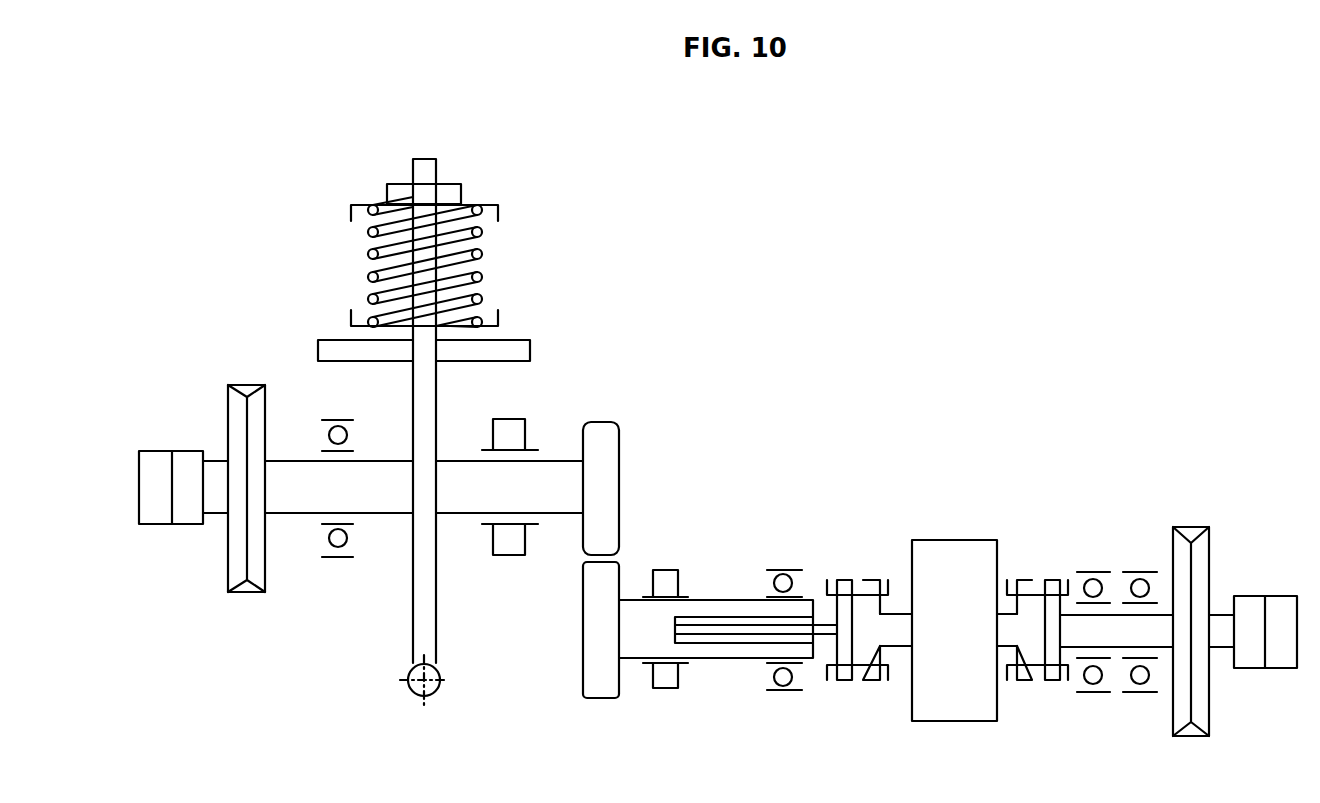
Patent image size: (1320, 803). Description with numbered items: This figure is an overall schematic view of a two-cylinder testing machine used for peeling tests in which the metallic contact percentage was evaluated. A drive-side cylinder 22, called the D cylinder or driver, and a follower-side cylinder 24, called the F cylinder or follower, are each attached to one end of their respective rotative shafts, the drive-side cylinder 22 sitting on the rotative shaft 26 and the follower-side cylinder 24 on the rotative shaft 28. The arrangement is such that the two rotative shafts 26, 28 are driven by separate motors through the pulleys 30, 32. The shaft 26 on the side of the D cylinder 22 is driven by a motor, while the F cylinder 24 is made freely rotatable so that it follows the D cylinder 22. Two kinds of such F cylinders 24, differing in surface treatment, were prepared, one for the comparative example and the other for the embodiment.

The drive-side cylinder 22 is at (608, 445).
The follower-side cylinder 24 is at (593, 660).
The rotative shaft 26 is at (557, 470).
The rotative shaft 28 is at (725, 651).
The pulley 30 is at (233, 412).
The pulley 32 is at (1177, 717).